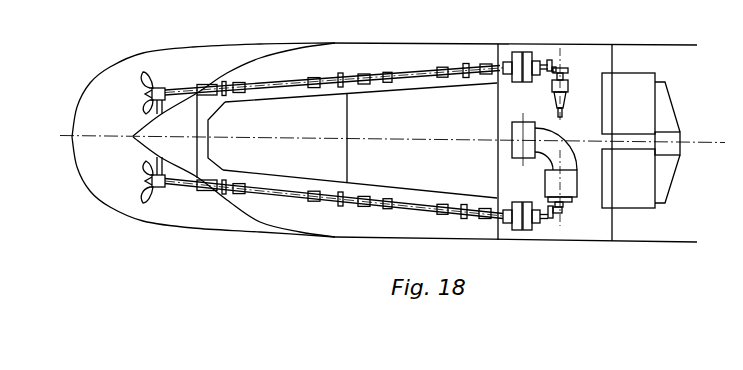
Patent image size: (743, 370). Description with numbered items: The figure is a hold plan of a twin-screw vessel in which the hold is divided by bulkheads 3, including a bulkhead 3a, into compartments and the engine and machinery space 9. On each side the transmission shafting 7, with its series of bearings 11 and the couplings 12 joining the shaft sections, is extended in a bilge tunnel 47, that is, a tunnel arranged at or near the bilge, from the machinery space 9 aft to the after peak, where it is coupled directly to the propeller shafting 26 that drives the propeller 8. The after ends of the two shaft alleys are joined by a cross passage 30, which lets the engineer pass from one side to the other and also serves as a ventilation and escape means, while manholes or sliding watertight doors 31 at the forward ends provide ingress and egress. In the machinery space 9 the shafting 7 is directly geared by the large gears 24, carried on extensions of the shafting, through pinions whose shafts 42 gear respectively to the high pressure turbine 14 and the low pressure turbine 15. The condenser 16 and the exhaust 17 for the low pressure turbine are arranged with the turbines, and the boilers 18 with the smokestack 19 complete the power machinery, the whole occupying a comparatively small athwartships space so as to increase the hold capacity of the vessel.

The bulkhead 3 is at (208, 133).
The bulkhead 3a is at (197, 152).
The shafting 7 is at (399, 79).
The propeller 8 is at (141, 90).
The engine and machinery space 9 is at (594, 228).
The bearing 11 is at (483, 63).
The coupling 12 is at (468, 78).
The high pressure turbine 14 is at (569, 96).
The low pressure turbine 15 is at (574, 178).
The condenser 16 is at (512, 126).
The exhaust 17 is at (525, 144).
The boilers 18 is at (628, 140).
The smokestack 19 is at (672, 138).
The large gear 24 is at (528, 50).
The propeller shafting 26 is at (178, 90).
The cross passage 30 is at (200, 120).
The manhole or sliding watertight door 31 is at (500, 80).
The shaft 42 is at (550, 60).
The bilge tunnel 47 is at (314, 98).